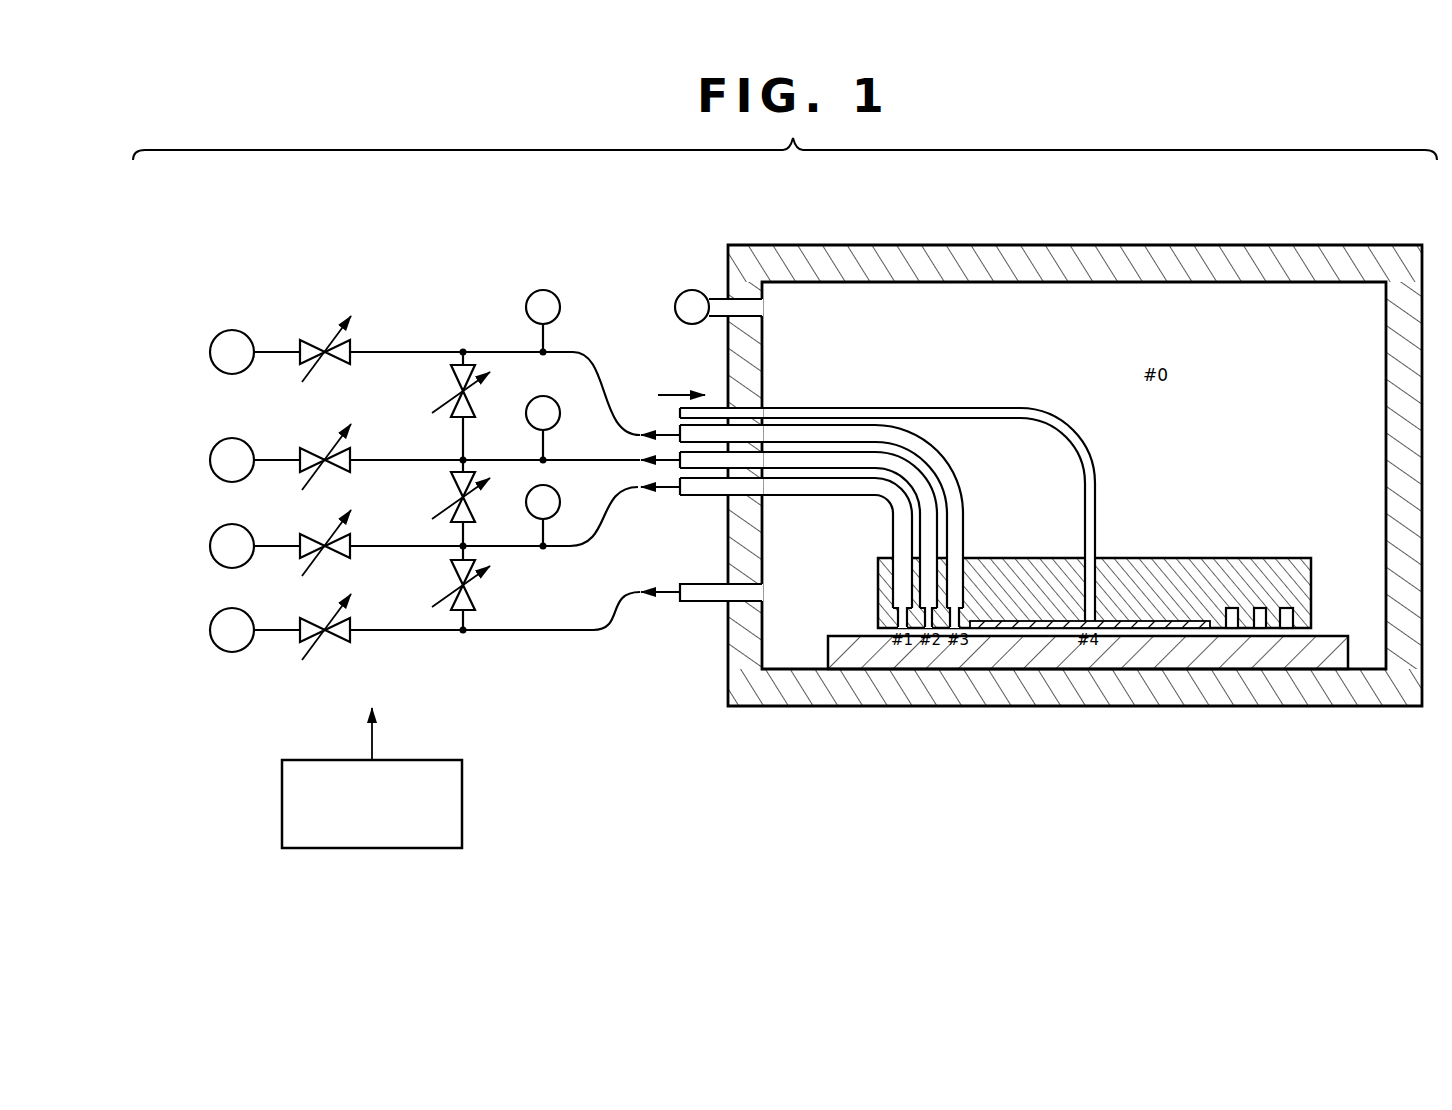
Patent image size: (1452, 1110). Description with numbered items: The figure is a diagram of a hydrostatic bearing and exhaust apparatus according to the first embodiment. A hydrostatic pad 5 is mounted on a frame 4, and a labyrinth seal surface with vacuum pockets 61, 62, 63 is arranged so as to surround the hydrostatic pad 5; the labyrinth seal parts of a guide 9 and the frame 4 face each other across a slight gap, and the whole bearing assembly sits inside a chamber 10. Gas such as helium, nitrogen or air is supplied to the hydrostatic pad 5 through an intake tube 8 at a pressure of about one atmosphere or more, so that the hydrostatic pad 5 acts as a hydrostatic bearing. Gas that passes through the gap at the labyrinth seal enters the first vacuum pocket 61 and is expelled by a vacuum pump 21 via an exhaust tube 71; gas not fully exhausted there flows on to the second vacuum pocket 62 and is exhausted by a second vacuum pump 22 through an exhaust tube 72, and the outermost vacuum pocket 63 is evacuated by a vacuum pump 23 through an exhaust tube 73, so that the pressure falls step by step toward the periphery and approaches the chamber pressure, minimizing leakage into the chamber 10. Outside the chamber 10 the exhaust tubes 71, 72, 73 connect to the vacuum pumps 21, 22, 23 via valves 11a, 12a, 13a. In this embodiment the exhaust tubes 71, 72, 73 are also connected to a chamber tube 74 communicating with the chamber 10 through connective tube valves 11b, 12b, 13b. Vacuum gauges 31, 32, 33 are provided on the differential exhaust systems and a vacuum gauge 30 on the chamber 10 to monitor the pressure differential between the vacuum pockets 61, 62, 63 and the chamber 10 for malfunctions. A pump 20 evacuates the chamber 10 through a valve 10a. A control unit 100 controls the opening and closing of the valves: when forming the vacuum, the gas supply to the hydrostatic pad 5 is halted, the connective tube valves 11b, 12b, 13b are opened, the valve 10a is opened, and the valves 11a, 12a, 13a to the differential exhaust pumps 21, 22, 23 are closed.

The frame 4 is at (1137, 573).
The hydrostatic pad 5 is at (1200, 620).
The intake tube 8 is at (963, 406).
The guide 9 is at (1030, 670).
The chamber 10 is at (1320, 257).
The valve 10a is at (302, 617).
The valve 11a is at (302, 535).
The valve 12a is at (302, 450).
The valve 13a is at (302, 342).
The connective tube valve 11b is at (452, 579).
The connective tube valve 12b is at (452, 491).
The connective tube valve 13b is at (452, 385).
The pump 20 is at (210, 630).
The vacuum pump 21 is at (210, 546).
The second vacuum pump 22 is at (210, 460).
The vacuum pump 23 is at (210, 352).
The vacuum gauge 30 is at (692, 290).
The vacuum gauge 31 is at (560, 500).
The vacuum gauge 32 is at (560, 413).
The vacuum gauge 33 is at (560, 305).
The first vacuum pocket 61 is at (1287, 628).
The second vacuum pocket 62 is at (1260, 628).
The outermost vacuum pocket 63 is at (1230, 628).
The exhaust tube 71 is at (900, 535).
The exhaust tube 72 is at (932, 533).
The exhaust tube 73 is at (950, 480).
The chamber tube 74 is at (693, 603).
The control unit 100 is at (463, 803).